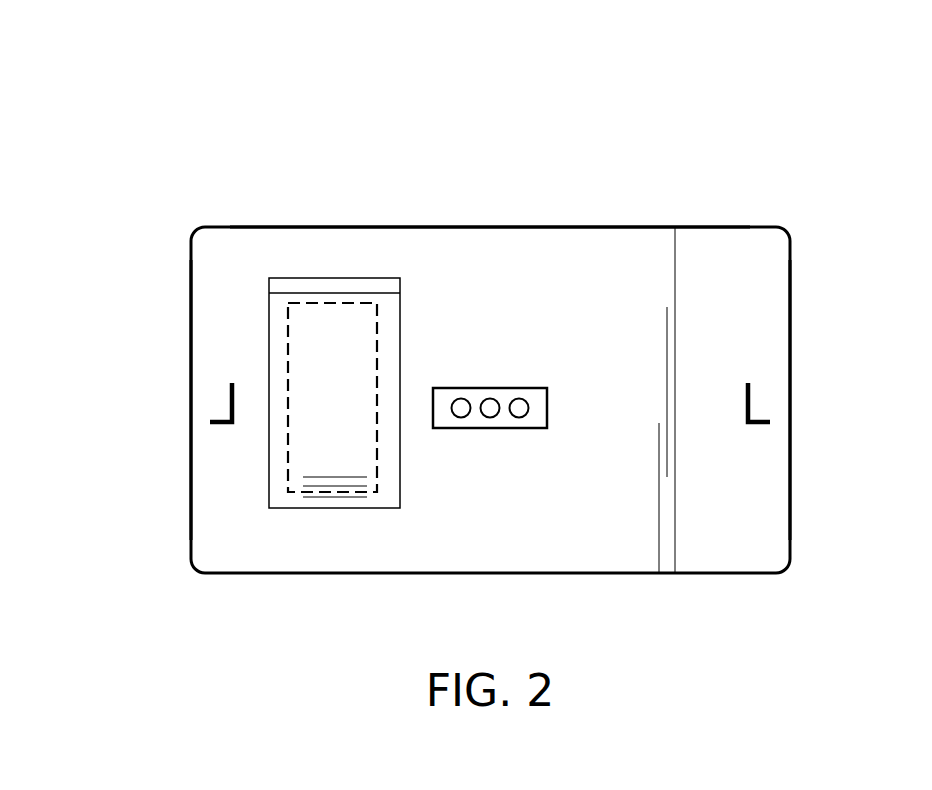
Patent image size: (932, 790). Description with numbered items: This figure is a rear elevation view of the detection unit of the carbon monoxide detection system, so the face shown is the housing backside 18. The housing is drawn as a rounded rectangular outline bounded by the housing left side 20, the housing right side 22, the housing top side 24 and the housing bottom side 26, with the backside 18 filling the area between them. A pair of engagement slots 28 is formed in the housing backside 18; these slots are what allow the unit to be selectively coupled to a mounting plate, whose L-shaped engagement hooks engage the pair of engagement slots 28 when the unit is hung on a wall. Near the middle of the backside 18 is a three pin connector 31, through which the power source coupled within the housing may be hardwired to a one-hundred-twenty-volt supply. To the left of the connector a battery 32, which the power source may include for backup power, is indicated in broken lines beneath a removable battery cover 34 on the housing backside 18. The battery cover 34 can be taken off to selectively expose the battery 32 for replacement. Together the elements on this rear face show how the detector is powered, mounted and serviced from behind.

The housing backside 18 is at (737, 451).
The housing left side 20 is at (790, 403).
The housing right side 22 is at (203, 440).
The housing top side 24 is at (474, 227).
The housing bottom side 26 is at (679, 575).
The engagement slots 28 is at (232, 383).
The three pin connector 31 is at (518, 400).
The battery 32 is at (305, 472).
The removable battery cover 34 is at (370, 503).